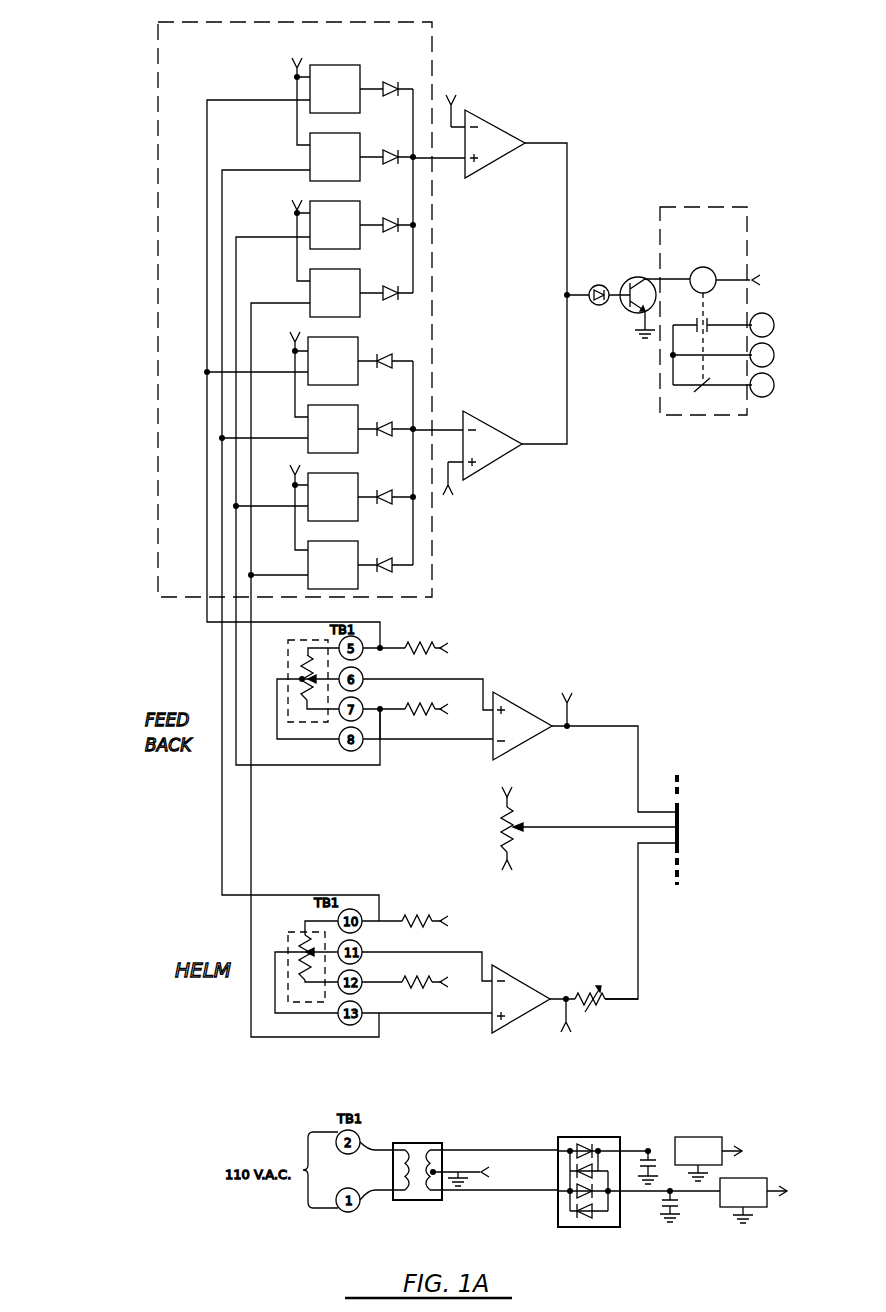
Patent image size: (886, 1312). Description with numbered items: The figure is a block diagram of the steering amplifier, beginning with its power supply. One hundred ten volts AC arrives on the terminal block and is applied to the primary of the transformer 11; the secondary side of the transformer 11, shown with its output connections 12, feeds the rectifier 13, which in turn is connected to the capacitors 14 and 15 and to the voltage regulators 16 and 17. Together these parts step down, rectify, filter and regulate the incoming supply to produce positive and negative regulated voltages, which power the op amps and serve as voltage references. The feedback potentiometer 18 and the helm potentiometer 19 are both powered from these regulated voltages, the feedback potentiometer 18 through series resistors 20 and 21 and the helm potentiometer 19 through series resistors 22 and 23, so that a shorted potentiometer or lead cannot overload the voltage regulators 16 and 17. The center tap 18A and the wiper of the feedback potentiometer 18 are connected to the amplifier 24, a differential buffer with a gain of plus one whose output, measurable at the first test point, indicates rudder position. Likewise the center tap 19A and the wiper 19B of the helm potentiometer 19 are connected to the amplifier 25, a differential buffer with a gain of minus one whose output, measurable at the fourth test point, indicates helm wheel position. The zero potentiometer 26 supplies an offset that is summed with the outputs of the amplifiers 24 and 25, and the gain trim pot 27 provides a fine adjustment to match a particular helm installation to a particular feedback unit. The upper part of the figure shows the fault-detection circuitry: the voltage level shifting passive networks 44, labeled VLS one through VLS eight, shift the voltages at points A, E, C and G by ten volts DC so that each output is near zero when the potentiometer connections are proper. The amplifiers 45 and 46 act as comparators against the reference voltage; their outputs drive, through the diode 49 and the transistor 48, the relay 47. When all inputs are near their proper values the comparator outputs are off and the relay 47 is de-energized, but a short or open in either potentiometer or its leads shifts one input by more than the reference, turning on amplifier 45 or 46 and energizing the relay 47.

The voltage level shifting passive networks 44 is at (262, 22).
The amplifier 45 is at (491, 160).
The amplifier 46 is at (493, 461).
The relay 47 is at (716, 207).
The transistor Q3 48 is at (633, 311).
The diode 49 is at (600, 285).
The feedback potentiometer 18 is at (288, 650).
The center tap 18A is at (277, 679).
The series resistor 20 is at (436, 645).
The series resistor 21 is at (436, 706).
The amplifier 24 is at (527, 706).
The zero potentiometer 26 is at (512, 817).
The helm potentiometer 19 is at (296, 932).
The center tap 19A is at (278, 951).
The wiper 19B is at (328, 950).
The series resistor 22 is at (437, 915).
The series resistor 23 is at (435, 978).
The amplifier 25 is at (494, 965).
The gain trim pot 27 is at (602, 1005).
The transformer 11 is at (431, 1150).
The transformer secondary output 12 is at (492, 1162).
The rectifier 13 is at (606, 1143).
The capacitor 14 is at (640, 1160).
The capacitor 15 is at (677, 1210).
The voltage regulator 16 is at (700, 1137).
The voltage regulator 17 is at (764, 1181).